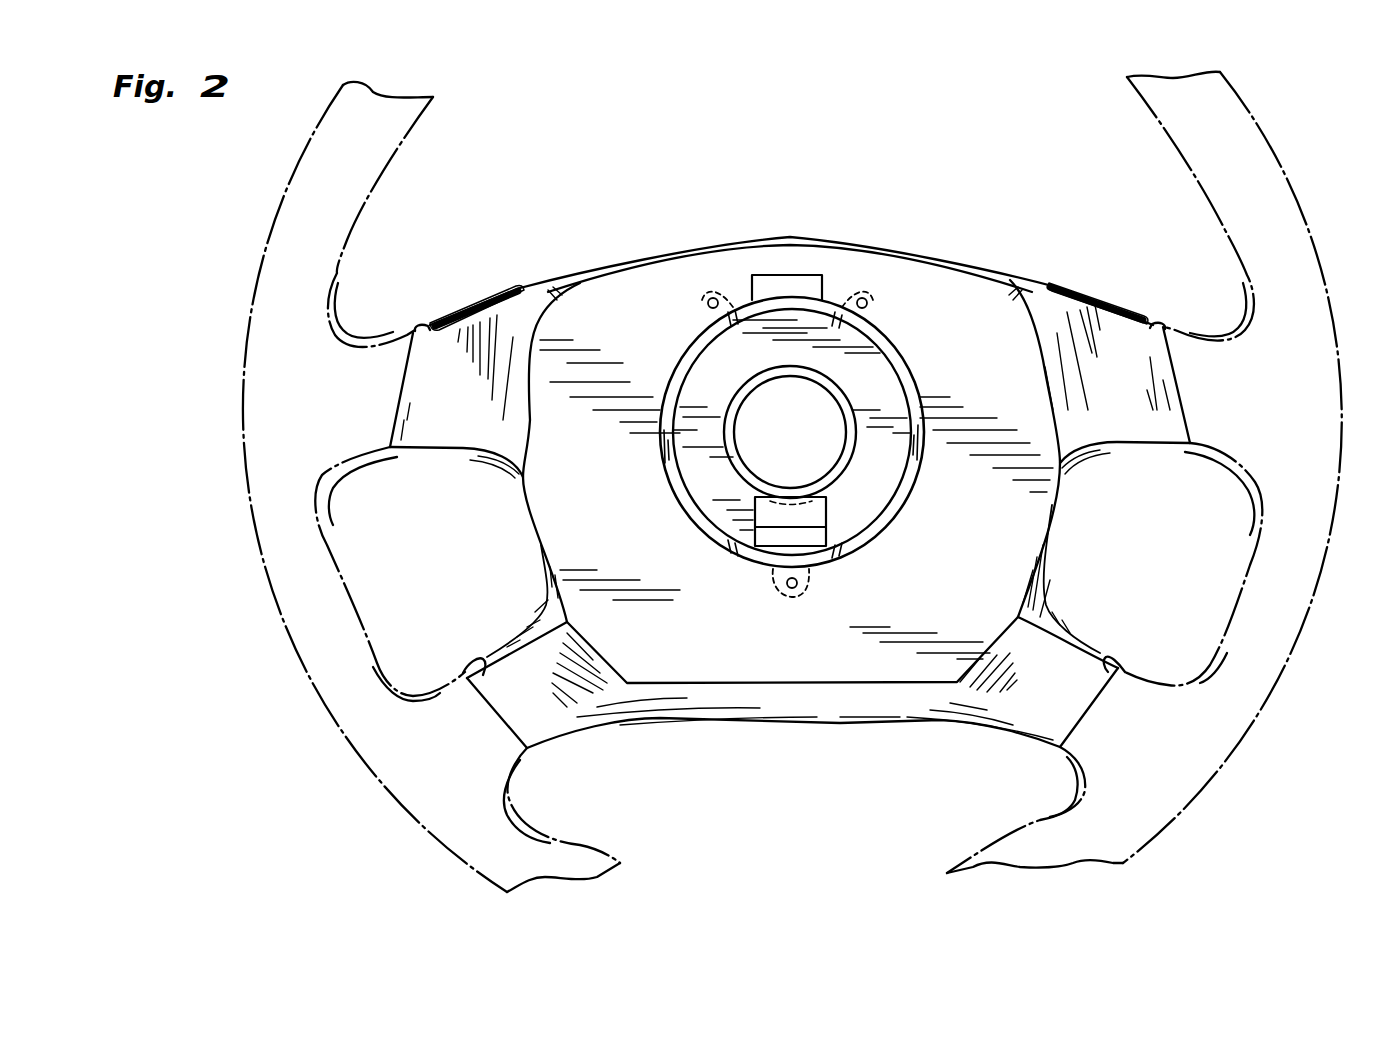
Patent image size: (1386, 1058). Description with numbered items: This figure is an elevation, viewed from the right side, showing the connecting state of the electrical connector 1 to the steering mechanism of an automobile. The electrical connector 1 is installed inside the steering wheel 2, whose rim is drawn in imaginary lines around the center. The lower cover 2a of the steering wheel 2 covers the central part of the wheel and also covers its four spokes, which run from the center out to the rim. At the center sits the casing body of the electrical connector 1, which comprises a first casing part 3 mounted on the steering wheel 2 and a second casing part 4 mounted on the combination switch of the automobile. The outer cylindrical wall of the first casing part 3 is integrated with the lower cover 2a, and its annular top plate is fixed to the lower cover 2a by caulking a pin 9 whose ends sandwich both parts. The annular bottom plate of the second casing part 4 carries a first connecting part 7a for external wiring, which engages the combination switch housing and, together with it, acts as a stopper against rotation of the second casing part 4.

The steering wheel 2 is at (1284, 160).
The lower cover 2a is at (613, 300).
The electrical connector 1 is at (906, 352).
The first casing part 3 is at (724, 552).
The second casing part 4 is at (703, 373).
The first connecting part 7a is at (848, 532).
The pin 9 is at (806, 583).